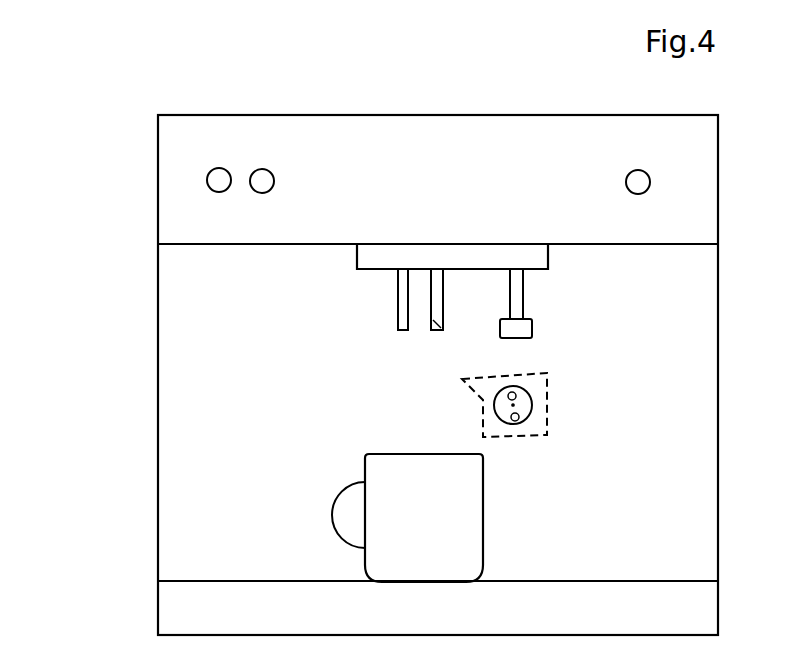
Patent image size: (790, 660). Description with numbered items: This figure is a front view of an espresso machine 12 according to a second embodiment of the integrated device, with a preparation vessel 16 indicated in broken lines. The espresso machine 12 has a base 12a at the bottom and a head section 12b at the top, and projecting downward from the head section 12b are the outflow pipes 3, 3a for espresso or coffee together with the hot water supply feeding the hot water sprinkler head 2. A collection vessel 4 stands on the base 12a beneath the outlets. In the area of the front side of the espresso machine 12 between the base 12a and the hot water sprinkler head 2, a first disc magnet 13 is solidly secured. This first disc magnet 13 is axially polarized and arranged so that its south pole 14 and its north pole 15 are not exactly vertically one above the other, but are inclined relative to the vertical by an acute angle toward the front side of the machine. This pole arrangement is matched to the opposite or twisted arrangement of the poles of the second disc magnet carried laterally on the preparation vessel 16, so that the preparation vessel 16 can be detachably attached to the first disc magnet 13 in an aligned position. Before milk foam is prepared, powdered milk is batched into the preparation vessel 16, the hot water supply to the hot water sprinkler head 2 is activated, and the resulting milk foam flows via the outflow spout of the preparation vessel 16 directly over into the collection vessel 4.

The hot water sprinkler head 2 is at (533, 336).
The outflow pipe 3 is at (405, 285).
The outflow pipe 3a is at (267, 352).
The collection vessel 4 is at (405, 503).
The espresso machine 12 is at (120, 218).
The base 12a is at (178, 608).
The head section 12b is at (182, 142).
The first disc magnet 13 is at (527, 405).
The south pole 14 is at (514, 396).
The north pole 15 is at (517, 418).
The preparation vessel 16 is at (560, 431).